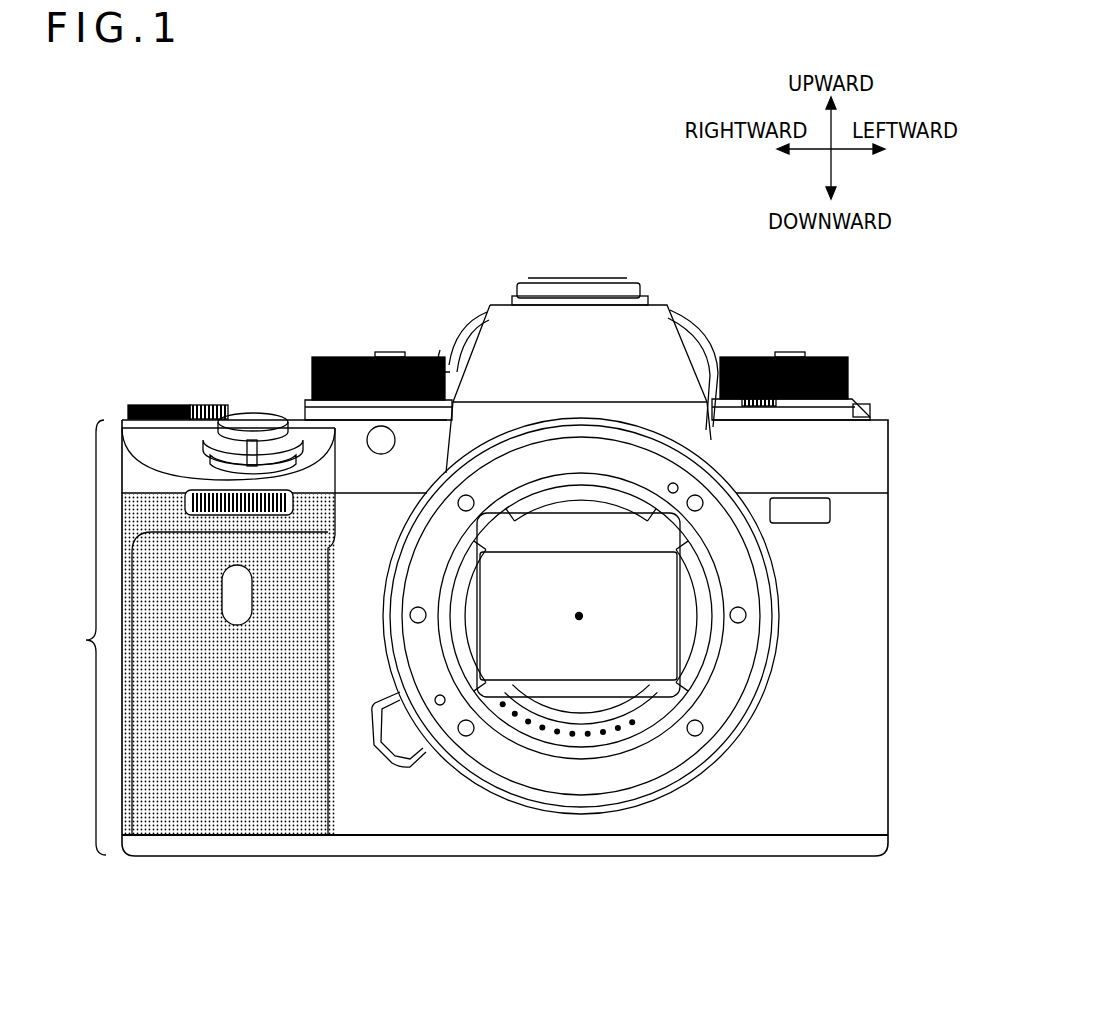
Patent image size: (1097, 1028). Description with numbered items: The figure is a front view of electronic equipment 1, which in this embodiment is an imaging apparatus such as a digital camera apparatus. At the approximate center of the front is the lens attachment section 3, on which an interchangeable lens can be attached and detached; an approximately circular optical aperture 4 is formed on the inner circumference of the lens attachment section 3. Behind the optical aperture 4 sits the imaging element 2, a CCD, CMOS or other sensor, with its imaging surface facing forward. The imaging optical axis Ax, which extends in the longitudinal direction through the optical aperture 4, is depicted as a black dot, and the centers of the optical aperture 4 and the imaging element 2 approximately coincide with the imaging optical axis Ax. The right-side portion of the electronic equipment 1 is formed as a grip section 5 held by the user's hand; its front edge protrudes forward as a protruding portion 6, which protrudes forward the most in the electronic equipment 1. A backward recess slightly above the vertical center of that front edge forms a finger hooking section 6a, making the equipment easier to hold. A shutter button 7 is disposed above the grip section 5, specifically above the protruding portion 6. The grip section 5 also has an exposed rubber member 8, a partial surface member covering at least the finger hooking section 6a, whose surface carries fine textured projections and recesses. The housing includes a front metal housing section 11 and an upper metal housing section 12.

The electronic equipment 1 is at (496, 634).
The imaging element 2 is at (655, 655).
The lens attachment section 3 is at (714, 705).
The optical aperture 4 is at (575, 712).
The grip section 5 is at (199, 637).
The protruding portion 6 is at (198, 692).
The finger hooking section 6a is at (193, 594).
The shutter button 7 is at (253, 420).
The rubber member 8 is at (247, 778).
The front metal housing section 11 is at (823, 663).
The upper metal housing section 12 is at (850, 438).
The imaging optical axis Ax is at (583, 618).